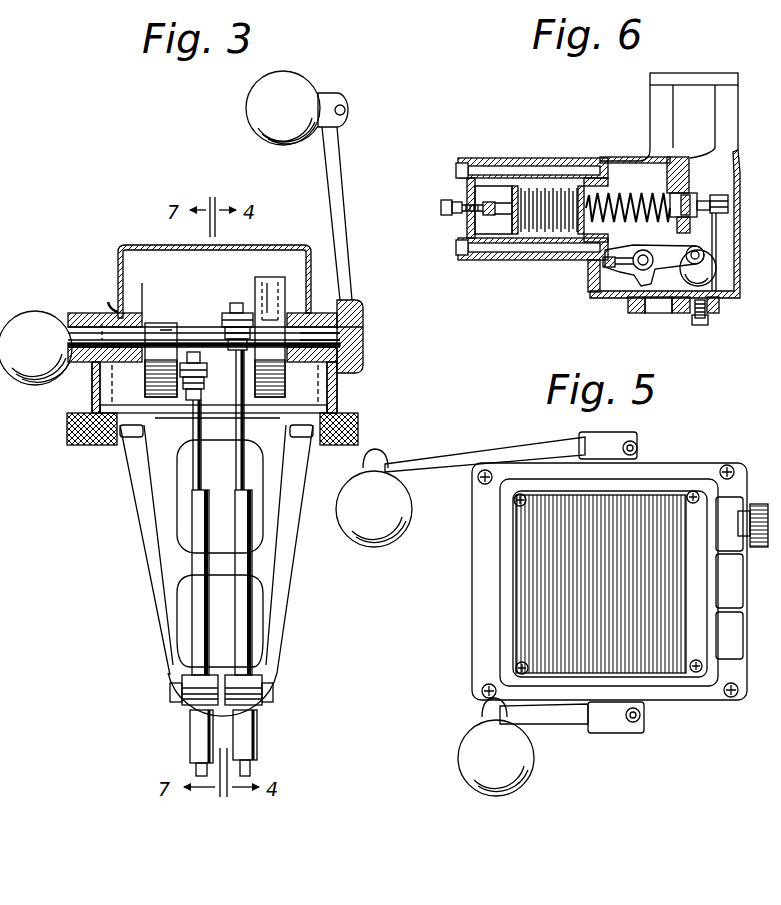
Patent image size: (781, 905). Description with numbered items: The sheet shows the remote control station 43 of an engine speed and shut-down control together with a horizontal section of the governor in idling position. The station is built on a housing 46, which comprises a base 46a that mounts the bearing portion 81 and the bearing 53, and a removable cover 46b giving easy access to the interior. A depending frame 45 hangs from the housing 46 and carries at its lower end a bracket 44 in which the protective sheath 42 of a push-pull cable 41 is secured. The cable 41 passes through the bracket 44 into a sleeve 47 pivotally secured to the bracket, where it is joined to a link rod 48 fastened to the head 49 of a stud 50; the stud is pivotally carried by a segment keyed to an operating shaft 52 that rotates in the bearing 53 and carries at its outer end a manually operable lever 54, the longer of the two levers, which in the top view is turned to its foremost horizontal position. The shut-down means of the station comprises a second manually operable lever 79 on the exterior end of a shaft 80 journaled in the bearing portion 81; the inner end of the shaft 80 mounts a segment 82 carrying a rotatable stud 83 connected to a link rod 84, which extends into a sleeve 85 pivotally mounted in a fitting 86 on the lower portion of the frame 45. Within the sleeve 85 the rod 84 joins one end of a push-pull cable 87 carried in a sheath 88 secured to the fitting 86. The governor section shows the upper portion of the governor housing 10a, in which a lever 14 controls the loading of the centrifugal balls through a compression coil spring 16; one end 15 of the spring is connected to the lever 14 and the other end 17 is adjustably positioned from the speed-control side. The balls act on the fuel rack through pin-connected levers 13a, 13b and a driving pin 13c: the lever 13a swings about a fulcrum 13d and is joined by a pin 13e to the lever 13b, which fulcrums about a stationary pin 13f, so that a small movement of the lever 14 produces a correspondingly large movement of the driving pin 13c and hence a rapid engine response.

In FIG. 6, the housing 10a is at (620, 268).
In FIG. 6, the lever 13a is at (680, 270).
In FIG. 6, the lever 13b is at (628, 276).
In FIG. 6, the driving pin 13c is at (692, 251).
In FIG. 6, the pivot or fulcrum 13d is at (708, 298).
In FIG. 6, the pin 13e is at (645, 287).
In FIG. 6, the stationary pin 13f is at (604, 262).
In FIG. 6, the lever 14 is at (694, 250).
In FIG. 6, the one end of compression coil spring 15 is at (674, 195).
In FIG. 6, the compression coil spring 16 is at (640, 195).
In FIG. 6, the other end of coil spring 17 is at (519, 186).
In FIG. 3, the push-pull cable 41 is at (251, 767).
In FIG. 3, the protective sheath 42 is at (258, 742).
In FIG. 3, the remote control station 43 is at (93, 558).
In FIG. 3, the bracket 44 is at (268, 707).
In FIG. 3, the depending frame 45 is at (269, 569).
In FIG. 3, the housing 46 is at (88, 281).
In FIG. 5, the housing 46 is at (569, 583).
In FIG. 3, the base 46a is at (92, 404).
In FIG. 5, the base 46a is at (666, 694).
In FIG. 3, the removable cover 46b is at (137, 245).
In FIG. 3, the sleeve 47 is at (245, 607).
In FIG. 3, the link rod 48 is at (236, 453).
In FIG. 3, the head 49 is at (223, 323).
In FIG. 3, the stud 50 is at (257, 314).
In FIG. 3, the operating shaft 52 is at (341, 338).
In FIG. 3, the bearing 53 is at (333, 310).
In FIG. 3, the manually operable lever 54 is at (344, 223).
In FIG. 5, the manually operable lever 54 is at (488, 455).
In FIG. 3, the manually operable lever 79 is at (70, 313).
In FIG. 5, the manually operable lever 79 is at (555, 725).
In FIG. 3, the shaft 80 is at (92, 313).
In FIG. 5, the shaft 80 is at (753, 525).
In FIG. 3, the bearing portion 81 is at (108, 312).
In FIG. 3, the segment 82 is at (150, 386).
In FIG. 3, the rotatable stud 83 is at (206, 378).
In FIG. 3, the link rod 84 is at (202, 469).
In FIG. 3, the sleeve 85 is at (196, 557).
In FIG. 3, the fitting 86 is at (179, 701).
In FIG. 3, the push-pull cable 87 is at (196, 770).
In FIG. 3, the sheath 88 is at (196, 739).